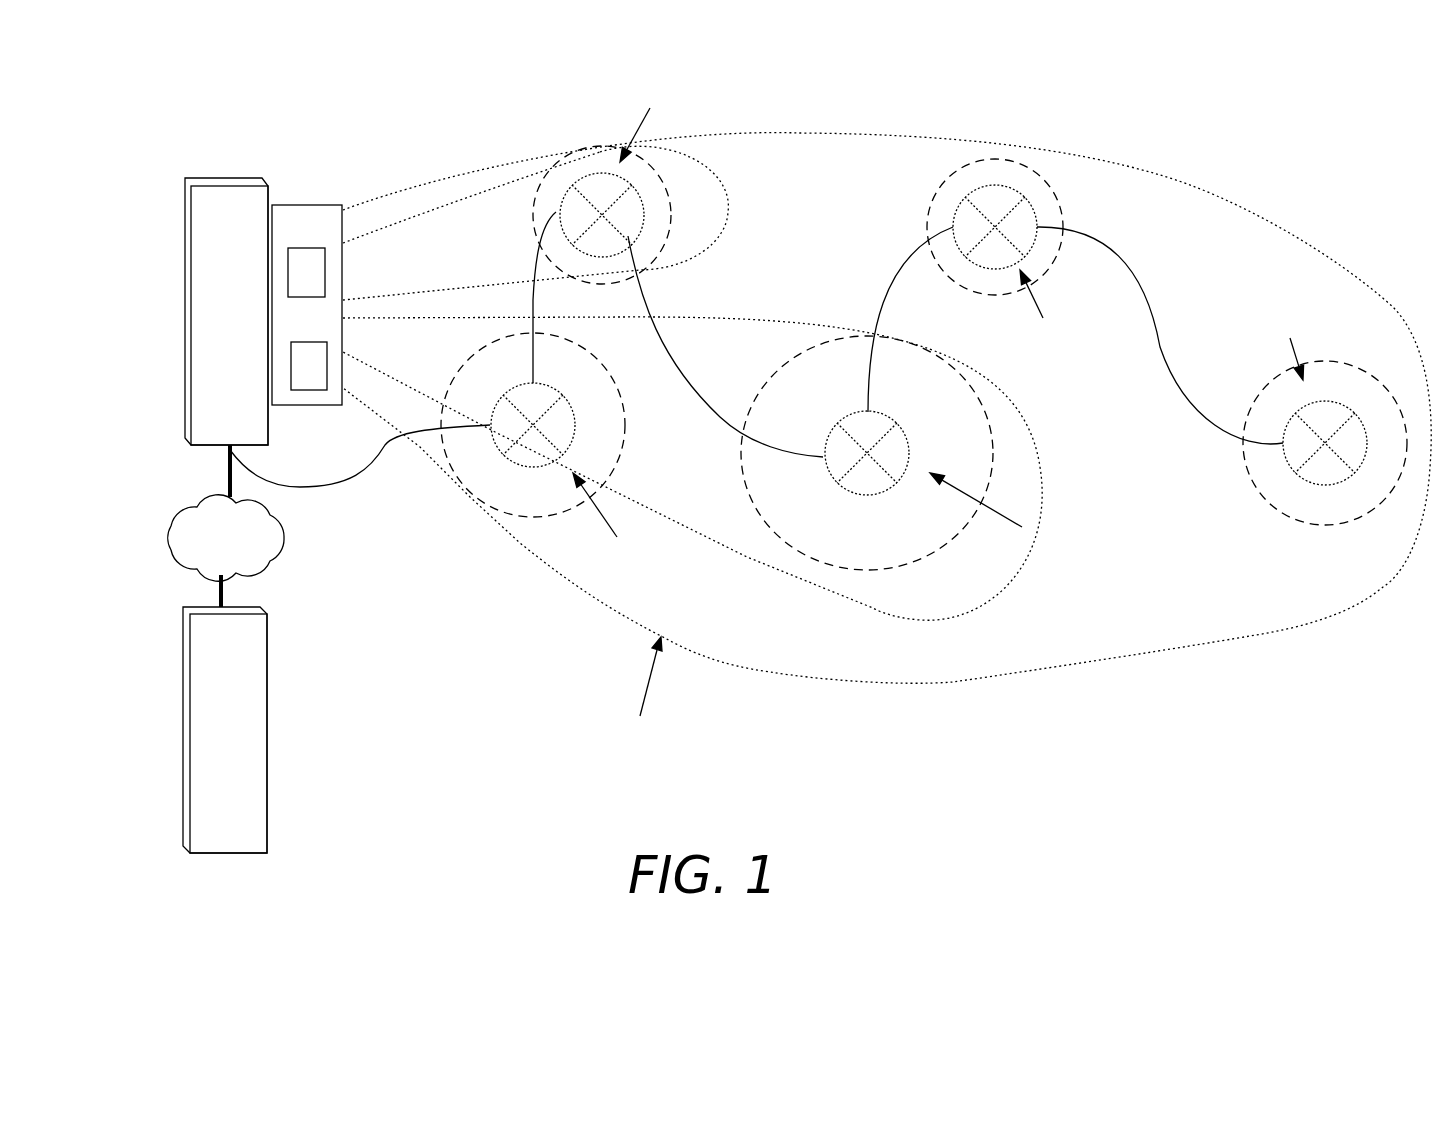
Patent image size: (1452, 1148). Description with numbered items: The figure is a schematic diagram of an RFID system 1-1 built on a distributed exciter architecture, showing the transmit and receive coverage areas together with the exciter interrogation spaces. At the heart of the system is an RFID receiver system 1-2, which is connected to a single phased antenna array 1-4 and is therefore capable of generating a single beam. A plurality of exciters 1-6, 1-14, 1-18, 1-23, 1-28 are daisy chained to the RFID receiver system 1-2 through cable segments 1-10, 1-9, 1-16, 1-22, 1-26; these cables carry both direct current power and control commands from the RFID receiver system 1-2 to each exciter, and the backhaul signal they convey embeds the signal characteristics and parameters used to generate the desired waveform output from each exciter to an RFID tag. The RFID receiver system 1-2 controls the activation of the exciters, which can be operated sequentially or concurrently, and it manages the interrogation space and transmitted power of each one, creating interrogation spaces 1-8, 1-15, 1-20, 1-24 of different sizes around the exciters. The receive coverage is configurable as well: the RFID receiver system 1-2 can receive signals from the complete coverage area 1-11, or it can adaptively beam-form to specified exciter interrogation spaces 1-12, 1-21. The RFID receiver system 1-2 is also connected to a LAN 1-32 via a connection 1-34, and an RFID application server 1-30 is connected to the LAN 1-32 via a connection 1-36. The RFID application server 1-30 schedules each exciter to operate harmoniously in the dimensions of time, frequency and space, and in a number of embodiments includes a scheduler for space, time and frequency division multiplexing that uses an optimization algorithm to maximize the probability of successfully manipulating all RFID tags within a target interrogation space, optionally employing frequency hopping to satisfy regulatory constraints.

The RFID system 1-1 is at (395, 724).
The RFID receiver system 1-2 is at (250, 224).
The phased antenna array 1-4 is at (328, 245).
The exciter 1-6 is at (512, 460).
The interrogation space 1-8 is at (623, 443).
The cable 1-9 is at (535, 320).
The cable 1-10 is at (295, 475).
The complete coverage area 1-11 is at (770, 672).
The exciter interrogation space 1-12 is at (383, 228).
The exciter 1-14 is at (642, 232).
The interrogation space 1-15 is at (677, 223).
The cable 1-16 is at (683, 373).
The exciter 1-18 is at (905, 438).
The interrogation space 1-20 is at (740, 470).
The exciter interrogation space 1-21 is at (877, 608).
The cable 1-22 is at (888, 293).
The exciter 1-23 is at (957, 210).
The interrogation space 1-24 is at (948, 178).
The cable 1-26 is at (1162, 350).
The exciter 1-28 is at (1283, 460).
The RFID application server 1-30 is at (258, 648).
The LAN 1-32 is at (283, 518).
The connection 1-34 is at (226, 472).
The connection 1-36 is at (222, 590).